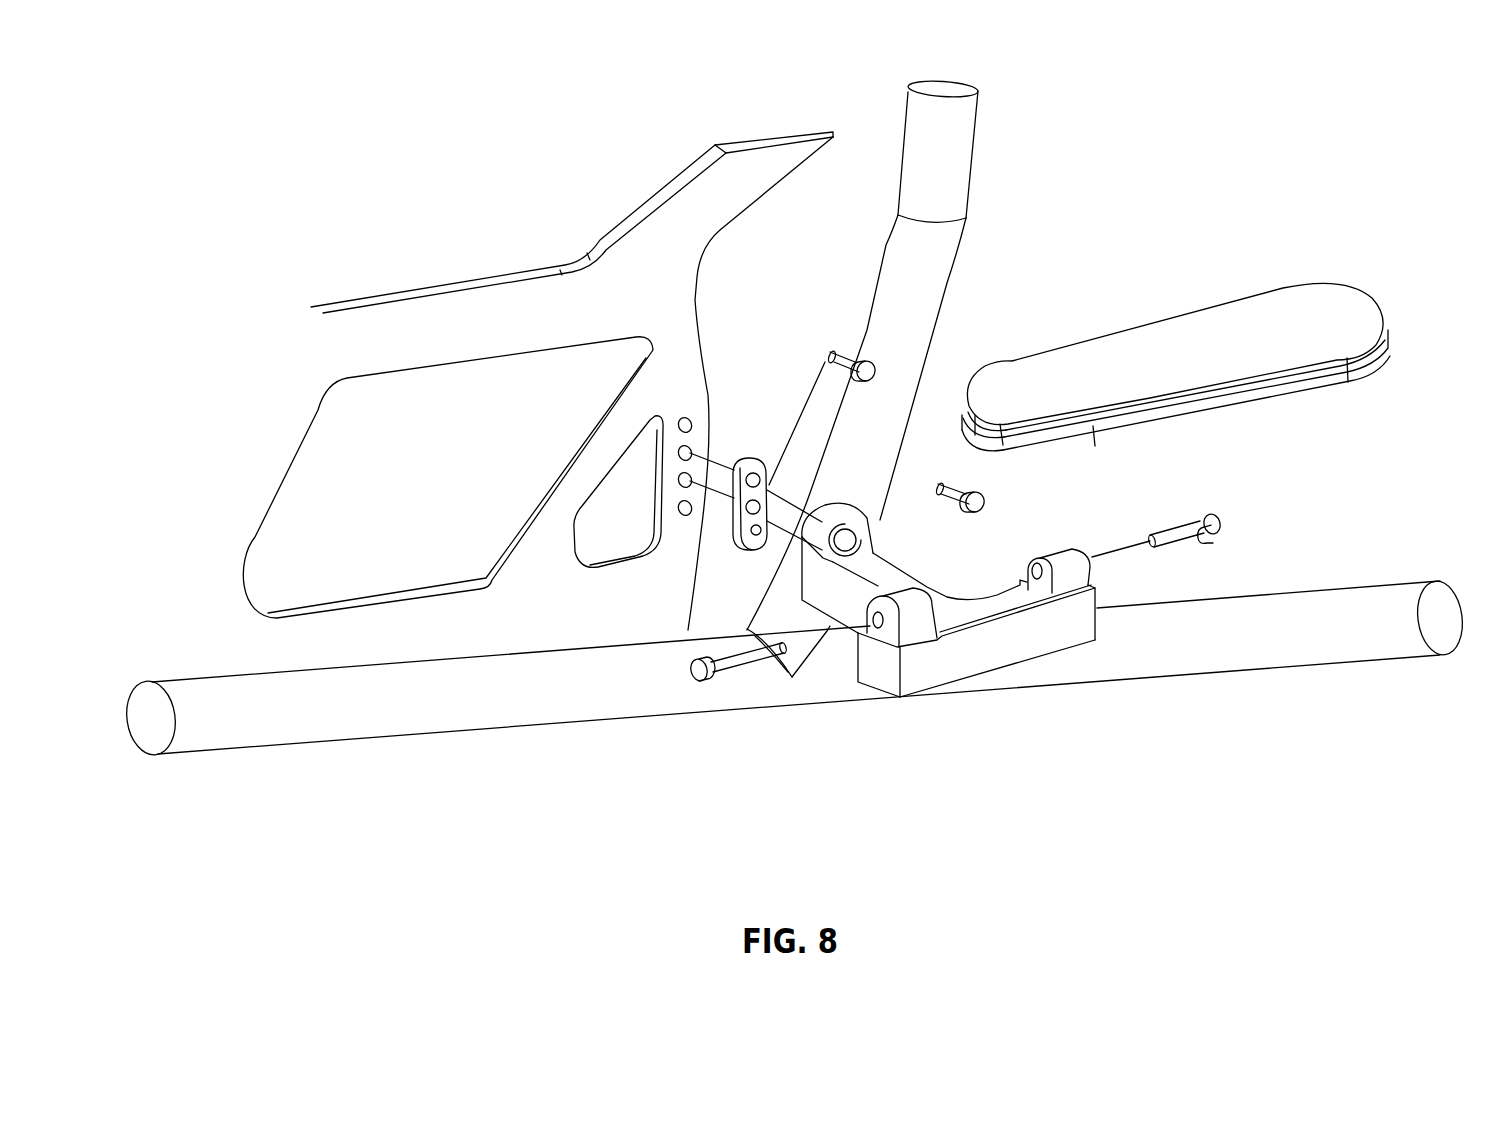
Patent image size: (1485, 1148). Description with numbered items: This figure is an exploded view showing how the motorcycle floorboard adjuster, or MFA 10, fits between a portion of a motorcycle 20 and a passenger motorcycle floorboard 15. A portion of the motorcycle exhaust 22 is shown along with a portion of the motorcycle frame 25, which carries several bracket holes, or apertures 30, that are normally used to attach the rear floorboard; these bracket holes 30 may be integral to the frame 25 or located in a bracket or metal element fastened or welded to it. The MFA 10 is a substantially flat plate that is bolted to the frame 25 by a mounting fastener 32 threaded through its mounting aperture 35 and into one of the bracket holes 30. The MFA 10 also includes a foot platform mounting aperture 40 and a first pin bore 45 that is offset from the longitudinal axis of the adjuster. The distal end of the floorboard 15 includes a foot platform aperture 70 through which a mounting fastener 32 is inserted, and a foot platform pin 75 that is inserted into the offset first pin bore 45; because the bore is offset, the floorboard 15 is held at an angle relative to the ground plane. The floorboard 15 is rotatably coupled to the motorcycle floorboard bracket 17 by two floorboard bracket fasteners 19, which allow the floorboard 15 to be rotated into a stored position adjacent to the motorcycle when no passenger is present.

The MFA 10 is at (770, 444).
The motorcycle floorboard 15 is at (1158, 382).
The motorcycle floorboard bracket 17 is at (948, 618).
The floorboard bracket fasteners 19 is at (703, 677).
The motorcycle 20 is at (990, 123).
The motorcycle exhaust 22 is at (794, 397).
The motorcycle frame 25 is at (668, 297).
The bracket holes 30 is at (678, 427).
The mounting fastener 32 is at (875, 363).
The mounting aperture 35 is at (765, 473).
The foot platform mounting aperture 40 is at (765, 502).
The first pin bore 45 is at (748, 533).
The foot platform aperture 70 is at (860, 524).
The foot platform pin 75 is at (795, 548).